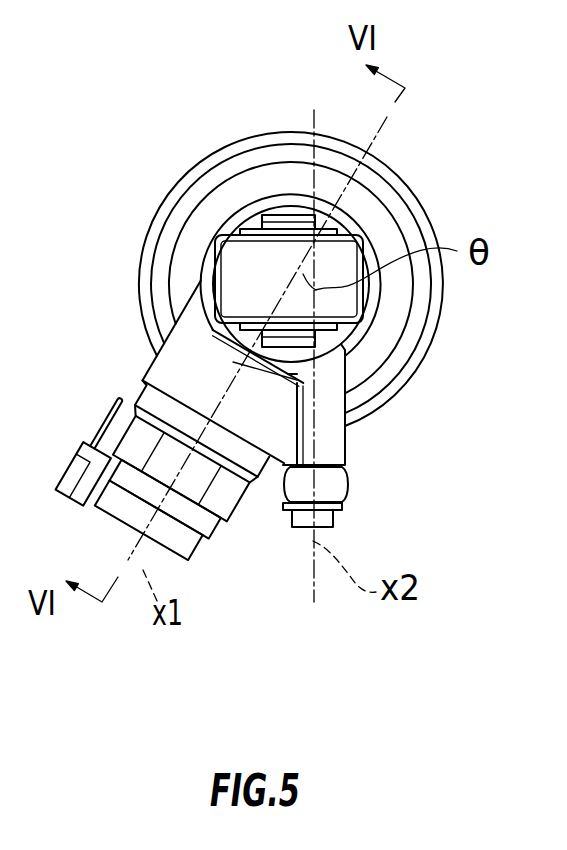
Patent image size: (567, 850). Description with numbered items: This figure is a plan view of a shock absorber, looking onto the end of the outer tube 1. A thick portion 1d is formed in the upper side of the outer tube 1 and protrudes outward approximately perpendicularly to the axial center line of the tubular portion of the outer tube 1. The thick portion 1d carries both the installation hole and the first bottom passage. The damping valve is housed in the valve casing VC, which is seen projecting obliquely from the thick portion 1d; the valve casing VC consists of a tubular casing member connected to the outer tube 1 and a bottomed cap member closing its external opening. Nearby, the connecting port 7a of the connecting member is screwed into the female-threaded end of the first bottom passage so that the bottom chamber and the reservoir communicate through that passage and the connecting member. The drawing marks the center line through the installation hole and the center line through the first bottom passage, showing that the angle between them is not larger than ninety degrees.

The outer tube 1 is at (408, 302).
The thick portion 1d is at (170, 353).
The connecting port 7a is at (332, 492).
The valve casing VC is at (210, 537).